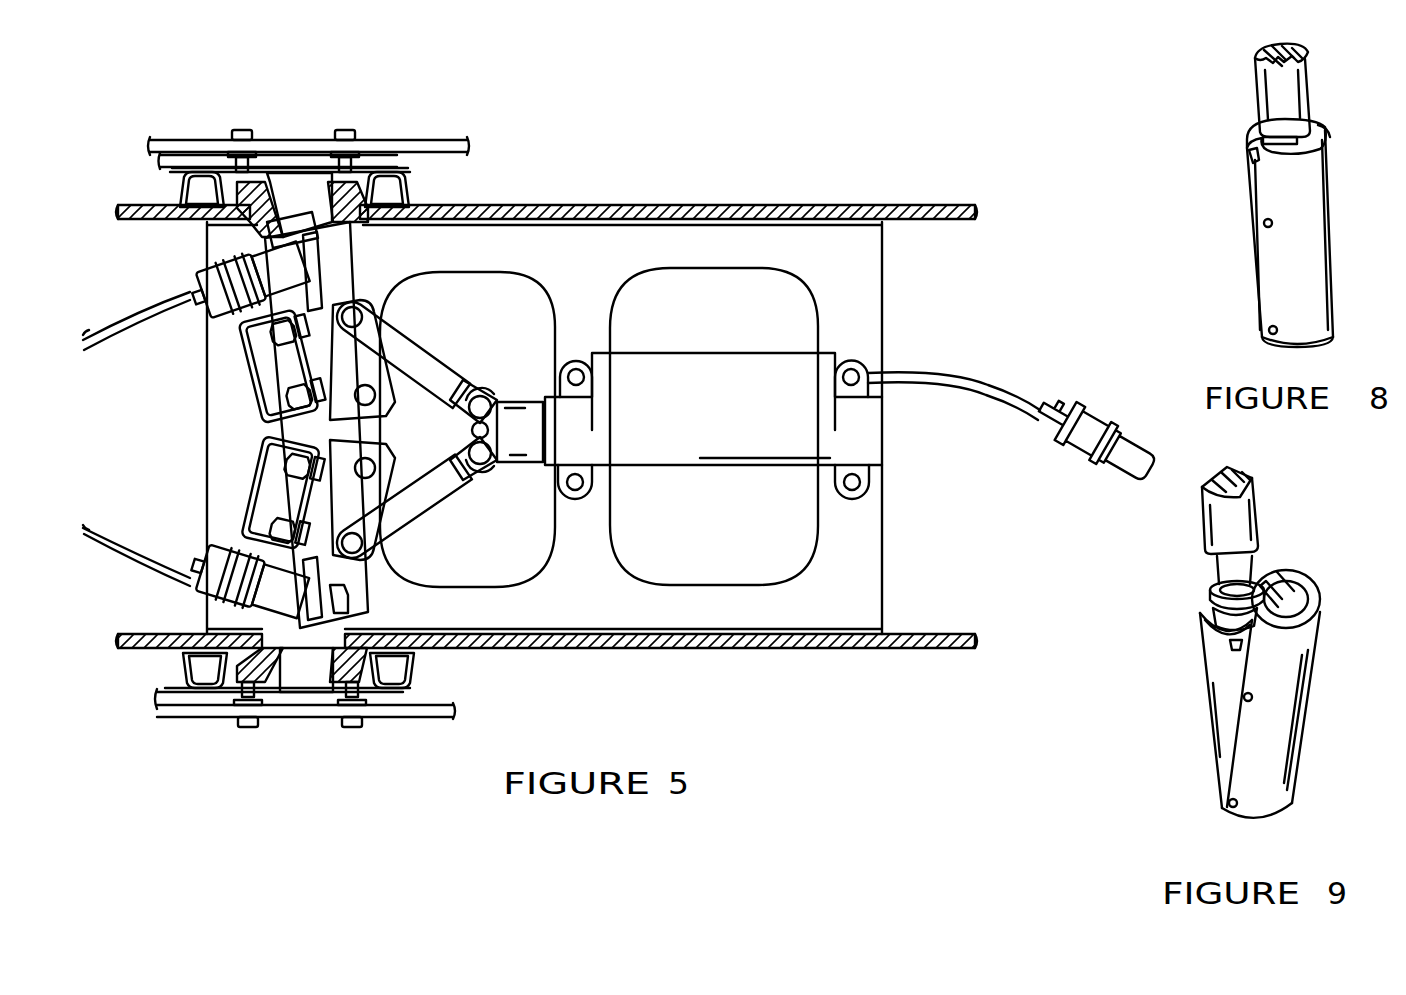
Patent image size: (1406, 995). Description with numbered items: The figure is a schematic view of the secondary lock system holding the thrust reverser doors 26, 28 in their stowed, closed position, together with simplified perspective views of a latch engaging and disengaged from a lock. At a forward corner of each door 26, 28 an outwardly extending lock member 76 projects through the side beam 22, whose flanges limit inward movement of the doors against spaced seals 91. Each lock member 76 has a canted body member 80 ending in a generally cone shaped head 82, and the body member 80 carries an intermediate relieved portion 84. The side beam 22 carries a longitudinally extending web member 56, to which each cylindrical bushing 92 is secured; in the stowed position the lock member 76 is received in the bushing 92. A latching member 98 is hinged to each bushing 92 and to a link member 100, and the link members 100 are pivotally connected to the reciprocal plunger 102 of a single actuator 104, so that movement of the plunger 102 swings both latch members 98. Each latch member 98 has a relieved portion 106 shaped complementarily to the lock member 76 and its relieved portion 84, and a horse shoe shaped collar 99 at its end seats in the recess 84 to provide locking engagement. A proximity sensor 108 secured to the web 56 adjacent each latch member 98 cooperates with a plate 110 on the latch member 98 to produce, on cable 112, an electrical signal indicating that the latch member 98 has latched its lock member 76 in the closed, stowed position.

In FIG. 5, the side beam 22 is at (662, 647).
In FIG. 5, the thrust reverser door 26 is at (300, 149).
In FIG. 5, the thrust reverser door 28 is at (301, 717).
In FIG. 5, the web member 56 is at (836, 602).
In FIG. 5, the lock member 76 is at (303, 191).
In FIG. 8, the body member 80 is at (1309, 95).
In FIG. 9, the body member 80 is at (1255, 502).
In FIG. 9, the cone shaped head 82 is at (1206, 588).
In FIG. 9, the relieved portion 84 is at (1213, 562).
In FIG. 5, the seals 91 is at (180, 195).
In FIG. 5, the cylindrical bushing 92 is at (395, 402).
In FIG. 5, the latching member 98 is at (357, 235).
In FIG. 8, the latching member 98 is at (1328, 215).
In FIG. 9, the latching member 98 is at (1296, 713).
In FIG. 9, the horse shoe shaped collar 99 is at (1288, 576).
In FIG. 5, the link member 100 is at (420, 343).
In FIG. 5, the reciprocal plunger 102 is at (529, 397).
In FIG. 5, the actuator 104 is at (751, 392).
In FIG. 5, the relieved portion 106 is at (343, 598).
In FIG. 5, the proximity sensor 108 is at (280, 266).
In FIG. 5, the plate 110 is at (356, 264).
In FIG. 5, the cable 112 is at (158, 317).